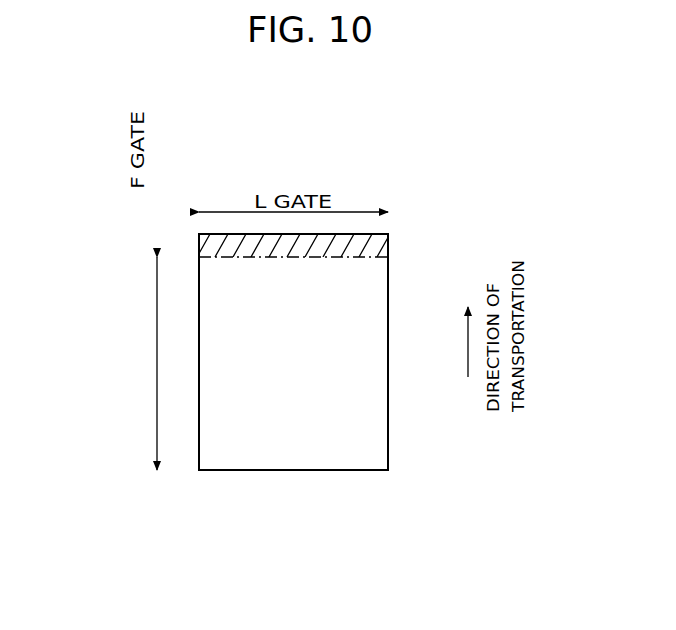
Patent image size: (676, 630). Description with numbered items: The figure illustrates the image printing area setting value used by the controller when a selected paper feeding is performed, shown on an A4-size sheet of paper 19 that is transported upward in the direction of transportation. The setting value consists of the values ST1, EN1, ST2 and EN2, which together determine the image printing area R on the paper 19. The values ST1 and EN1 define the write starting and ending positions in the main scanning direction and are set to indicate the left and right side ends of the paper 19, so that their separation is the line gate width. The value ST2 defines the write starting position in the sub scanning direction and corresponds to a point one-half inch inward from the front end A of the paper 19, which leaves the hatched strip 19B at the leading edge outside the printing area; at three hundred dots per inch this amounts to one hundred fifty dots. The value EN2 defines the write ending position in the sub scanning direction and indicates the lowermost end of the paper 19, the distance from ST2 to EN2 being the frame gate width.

The paper 19 is at (377, 461).
The front end portion of the paper 19B is at (377, 254).
The front end of the paper A is at (350, 229).
The image printing area R is at (305, 298).
The write starting position in the main scanning direction ST1 is at (199, 234).
The write ending position in the main scanning direction EN1 is at (388, 234).
The write starting position in the sub scanning direction ST2 is at (199, 257).
The write ending position in the sub scanning direction EN2 is at (199, 470).